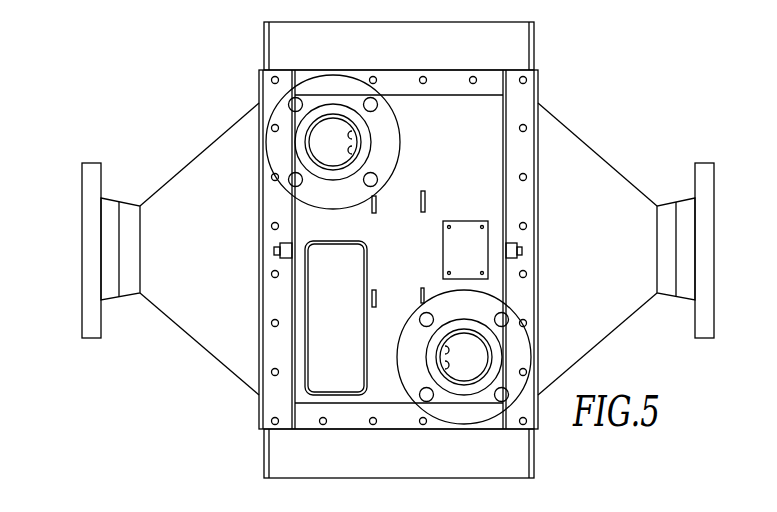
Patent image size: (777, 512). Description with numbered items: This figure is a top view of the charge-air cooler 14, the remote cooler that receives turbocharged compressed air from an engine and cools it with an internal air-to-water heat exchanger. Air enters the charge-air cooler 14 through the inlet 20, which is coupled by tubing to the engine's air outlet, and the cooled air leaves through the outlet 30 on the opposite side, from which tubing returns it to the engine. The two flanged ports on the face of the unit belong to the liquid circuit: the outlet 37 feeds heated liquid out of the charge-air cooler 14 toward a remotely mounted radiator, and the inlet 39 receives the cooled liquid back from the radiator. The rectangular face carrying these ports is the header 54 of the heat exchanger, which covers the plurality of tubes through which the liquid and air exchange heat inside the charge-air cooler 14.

The charge-air cooler 14 is at (400, 250).
The inlet 20 is at (716, 240).
The outlet 30 is at (81, 240).
The outlet 37 is at (332, 132).
The inlet 39 is at (455, 345).
The header 54 is at (457, 110).